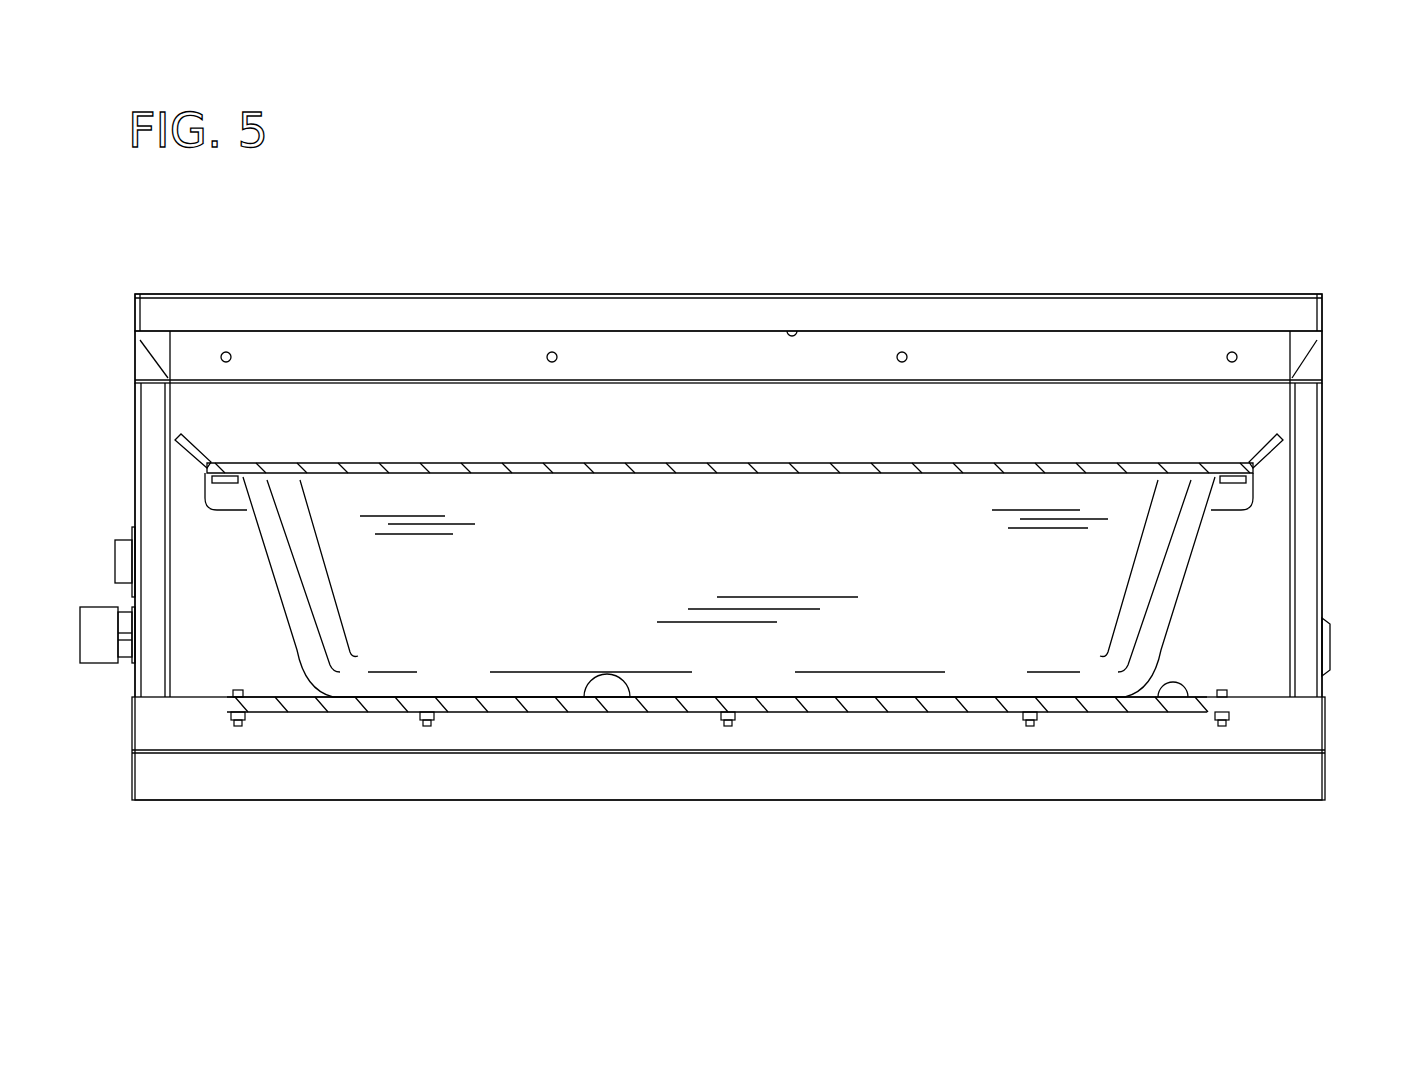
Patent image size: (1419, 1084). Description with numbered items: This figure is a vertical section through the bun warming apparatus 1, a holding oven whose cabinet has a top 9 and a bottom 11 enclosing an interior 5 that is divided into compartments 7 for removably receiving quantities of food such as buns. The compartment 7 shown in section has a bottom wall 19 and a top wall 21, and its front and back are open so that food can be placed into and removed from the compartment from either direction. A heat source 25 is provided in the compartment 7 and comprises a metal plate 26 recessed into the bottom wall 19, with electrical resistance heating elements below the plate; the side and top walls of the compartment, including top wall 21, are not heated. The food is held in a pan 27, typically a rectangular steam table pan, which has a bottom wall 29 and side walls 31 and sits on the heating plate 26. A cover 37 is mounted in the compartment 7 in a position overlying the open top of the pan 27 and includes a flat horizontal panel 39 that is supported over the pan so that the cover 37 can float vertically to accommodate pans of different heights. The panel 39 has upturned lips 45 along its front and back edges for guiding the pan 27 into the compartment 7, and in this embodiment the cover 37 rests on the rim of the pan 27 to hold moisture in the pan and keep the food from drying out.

The apparatus 1 is at (1283, 226).
The interior 5 is at (232, 688).
The compartment 7 is at (1213, 658).
The top 9 is at (440, 293).
The bottom 11 is at (770, 800).
The bottom wall 19 is at (1160, 700).
The top wall 21 is at (855, 385).
The heat source 25 is at (949, 712).
The metal plate 26 is at (873, 705).
The pan 27 is at (344, 664).
The bottom wall 29 is at (584, 700).
The side wall 31 is at (729, 681).
The cover 37 is at (1205, 443).
The panel 39 is at (515, 462).
The upturned lip 45 is at (192, 442).